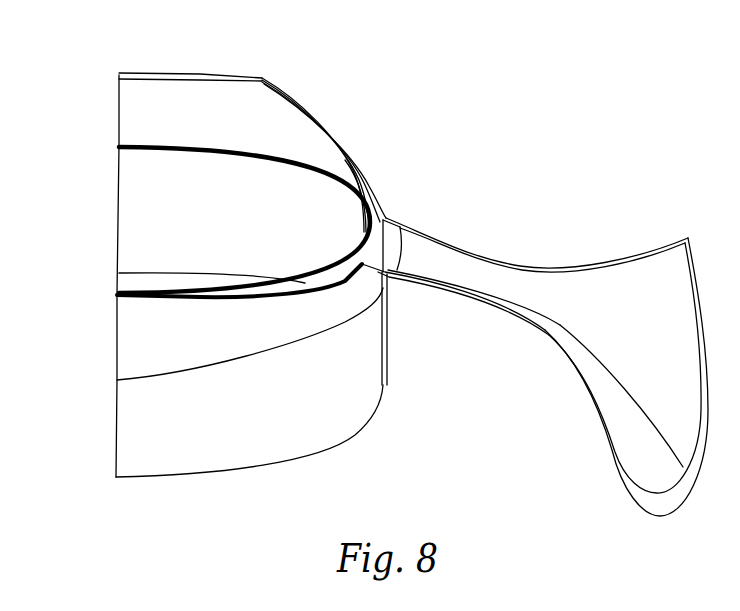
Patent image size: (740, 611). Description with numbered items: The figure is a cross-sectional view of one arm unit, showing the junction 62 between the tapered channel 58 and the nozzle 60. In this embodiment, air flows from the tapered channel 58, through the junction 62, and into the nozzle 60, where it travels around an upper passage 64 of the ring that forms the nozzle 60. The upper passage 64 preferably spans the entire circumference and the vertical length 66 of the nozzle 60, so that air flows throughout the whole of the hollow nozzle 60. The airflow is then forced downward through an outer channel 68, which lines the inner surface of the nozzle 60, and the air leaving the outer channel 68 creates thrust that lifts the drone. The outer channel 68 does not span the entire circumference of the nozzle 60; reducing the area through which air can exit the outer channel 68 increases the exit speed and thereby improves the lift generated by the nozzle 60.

The tapered channel 58 is at (618, 293).
The nozzle 60 is at (118, 66).
The junction 62 is at (417, 220).
The upper passage 64 is at (357, 178).
The vertical length 66 is at (103, 298).
The outer channel 68 is at (173, 147).